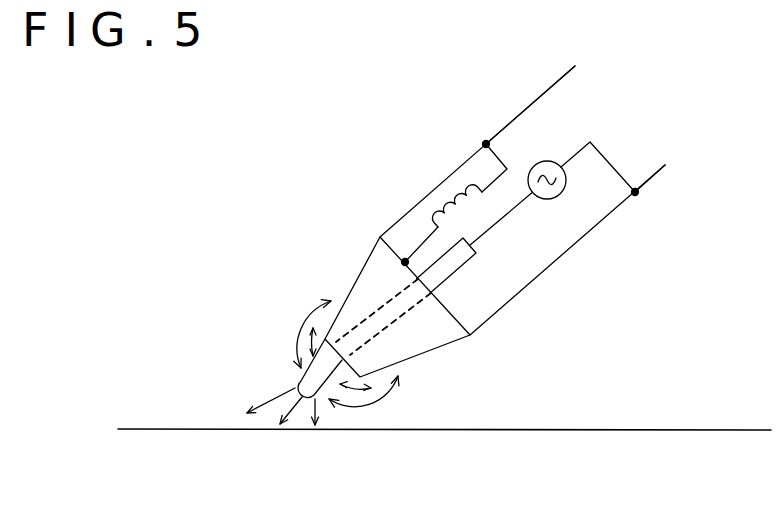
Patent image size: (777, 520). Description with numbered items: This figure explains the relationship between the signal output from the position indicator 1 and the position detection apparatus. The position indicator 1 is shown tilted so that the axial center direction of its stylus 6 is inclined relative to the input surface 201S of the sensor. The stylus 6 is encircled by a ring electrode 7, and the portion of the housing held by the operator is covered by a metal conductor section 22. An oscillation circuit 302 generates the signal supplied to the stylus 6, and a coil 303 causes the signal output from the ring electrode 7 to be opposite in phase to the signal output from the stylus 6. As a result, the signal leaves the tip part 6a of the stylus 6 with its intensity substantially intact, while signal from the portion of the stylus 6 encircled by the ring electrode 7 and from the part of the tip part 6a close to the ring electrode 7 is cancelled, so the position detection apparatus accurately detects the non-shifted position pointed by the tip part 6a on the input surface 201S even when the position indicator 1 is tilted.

The position indicator 1 is at (484, 141).
The conductor section 22 is at (545, 92).
The oscillation circuit 302 is at (548, 162).
The coil 303 is at (456, 199).
The ring electrode 7 is at (353, 287).
The stylus 6 is at (397, 327).
The tip part 6a is at (300, 382).
The input surface 201S is at (590, 428).